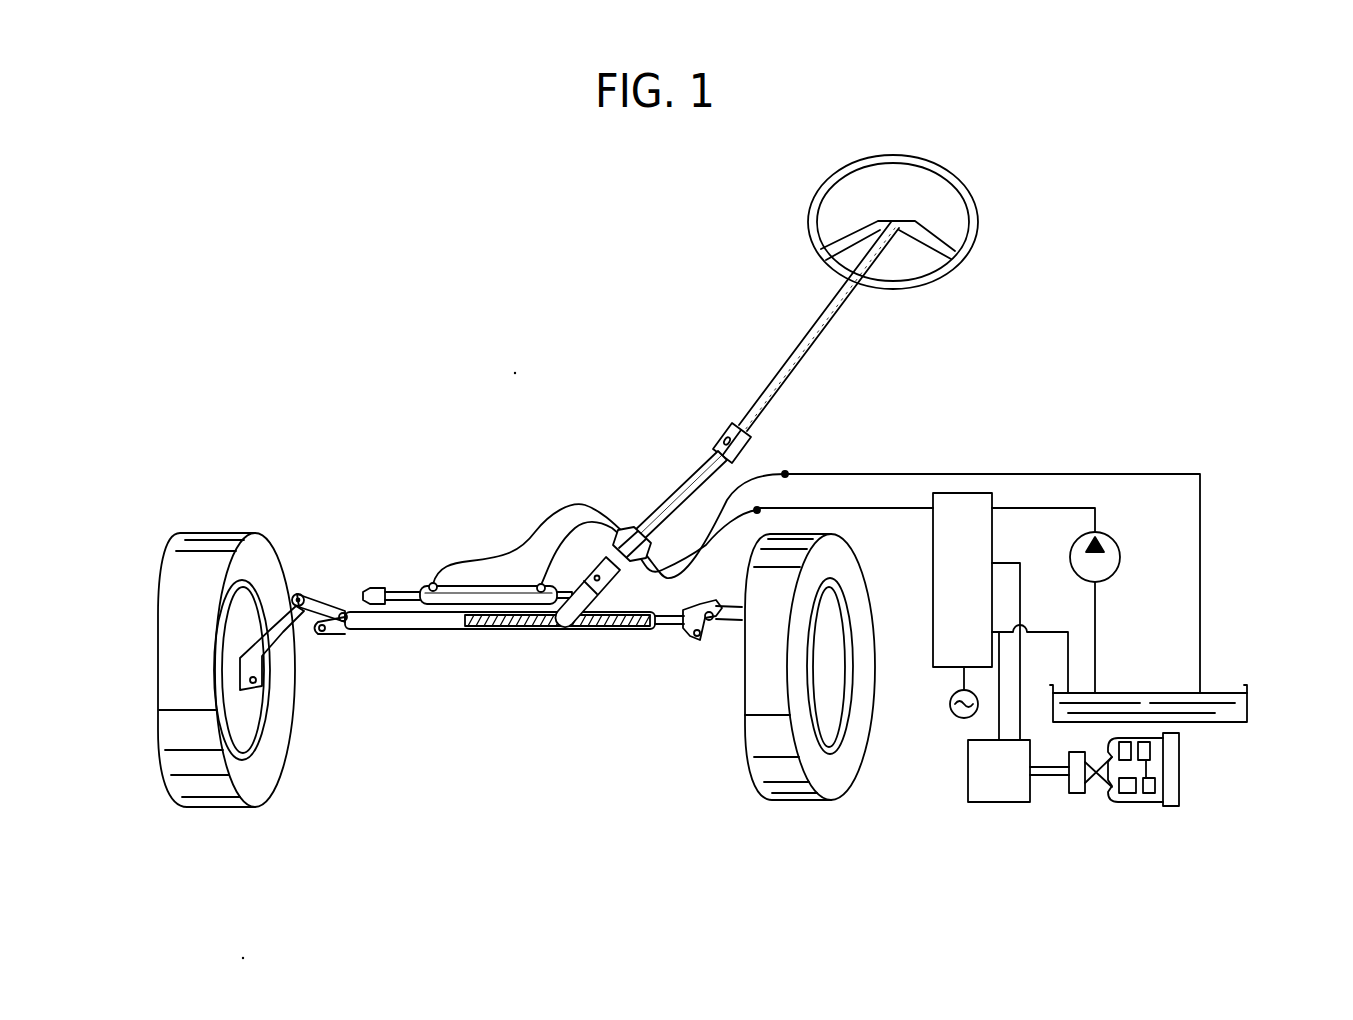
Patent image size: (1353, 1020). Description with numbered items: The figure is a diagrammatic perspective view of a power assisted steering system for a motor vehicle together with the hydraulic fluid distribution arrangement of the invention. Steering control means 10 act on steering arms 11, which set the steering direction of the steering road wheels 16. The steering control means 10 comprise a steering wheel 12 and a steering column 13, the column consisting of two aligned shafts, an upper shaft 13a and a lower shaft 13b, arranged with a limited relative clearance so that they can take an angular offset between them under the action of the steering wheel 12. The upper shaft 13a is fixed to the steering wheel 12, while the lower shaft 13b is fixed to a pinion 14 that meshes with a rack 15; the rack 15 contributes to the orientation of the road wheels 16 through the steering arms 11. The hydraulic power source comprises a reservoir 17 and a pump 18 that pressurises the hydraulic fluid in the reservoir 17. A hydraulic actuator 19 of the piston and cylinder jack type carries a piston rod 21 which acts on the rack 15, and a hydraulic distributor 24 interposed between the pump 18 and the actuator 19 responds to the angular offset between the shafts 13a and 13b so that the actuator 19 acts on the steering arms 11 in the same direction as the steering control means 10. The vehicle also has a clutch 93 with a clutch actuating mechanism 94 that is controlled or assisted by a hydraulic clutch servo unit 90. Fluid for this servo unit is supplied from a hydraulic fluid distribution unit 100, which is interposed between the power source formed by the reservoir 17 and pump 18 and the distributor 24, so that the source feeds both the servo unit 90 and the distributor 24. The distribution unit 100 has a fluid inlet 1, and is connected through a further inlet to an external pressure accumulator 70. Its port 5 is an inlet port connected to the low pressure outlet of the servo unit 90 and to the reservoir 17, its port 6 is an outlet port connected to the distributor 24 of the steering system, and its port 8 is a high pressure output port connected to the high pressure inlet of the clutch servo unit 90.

The fluid inlet 1 is at (995, 508).
The inlet port 5 is at (995, 632).
The outlet port 6 is at (932, 508).
The high pressure output port 8 is at (994, 553).
The steering control means 10 is at (730, 403).
The steering arms 11 is at (326, 604).
The steering wheel 12 is at (975, 196).
The steering column 13 is at (808, 328).
The upper shaft 13a is at (690, 484).
The lower shaft 13b is at (606, 592).
The pinion 14 is at (588, 628).
The rack 15 is at (475, 630).
The steering road wheels 16 is at (163, 583).
The reservoir 17 is at (1247, 718).
The pump 18 is at (1122, 549).
The hydraulic actuator 19 is at (511, 586).
The piston rod 21 is at (394, 590).
The hydraulic distributor 24 is at (630, 528).
The pressure accumulator 70 is at (948, 729).
The hydraulic clutch servo unit 90 is at (988, 757).
The clutch 93 is at (1180, 803).
The clutch actuating mechanism 94 is at (1077, 793).
The hydraulic fluid distribution unit 100 is at (958, 503).